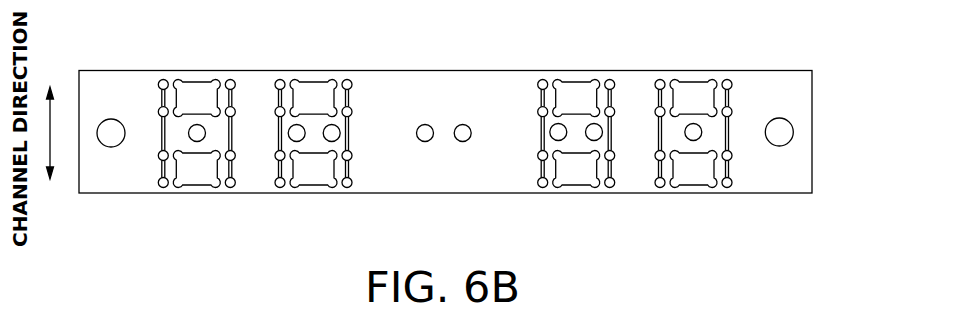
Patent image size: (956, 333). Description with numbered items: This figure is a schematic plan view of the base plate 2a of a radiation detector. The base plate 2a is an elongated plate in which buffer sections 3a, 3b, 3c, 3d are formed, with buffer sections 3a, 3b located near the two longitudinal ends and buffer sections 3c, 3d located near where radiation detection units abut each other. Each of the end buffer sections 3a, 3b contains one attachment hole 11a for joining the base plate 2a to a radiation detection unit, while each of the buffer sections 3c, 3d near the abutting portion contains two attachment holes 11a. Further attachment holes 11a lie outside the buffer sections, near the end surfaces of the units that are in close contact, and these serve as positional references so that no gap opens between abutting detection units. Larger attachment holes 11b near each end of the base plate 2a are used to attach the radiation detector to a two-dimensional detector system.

The base plate 2a is at (787, 88).
The buffer section 3a is at (197, 66).
The buffer section 3b is at (700, 63).
The buffer section 3c is at (313, 67).
The buffer section 3d is at (573, 65).
The attachment hole 11a is at (192, 140).
The attachment hole 11b is at (105, 147).